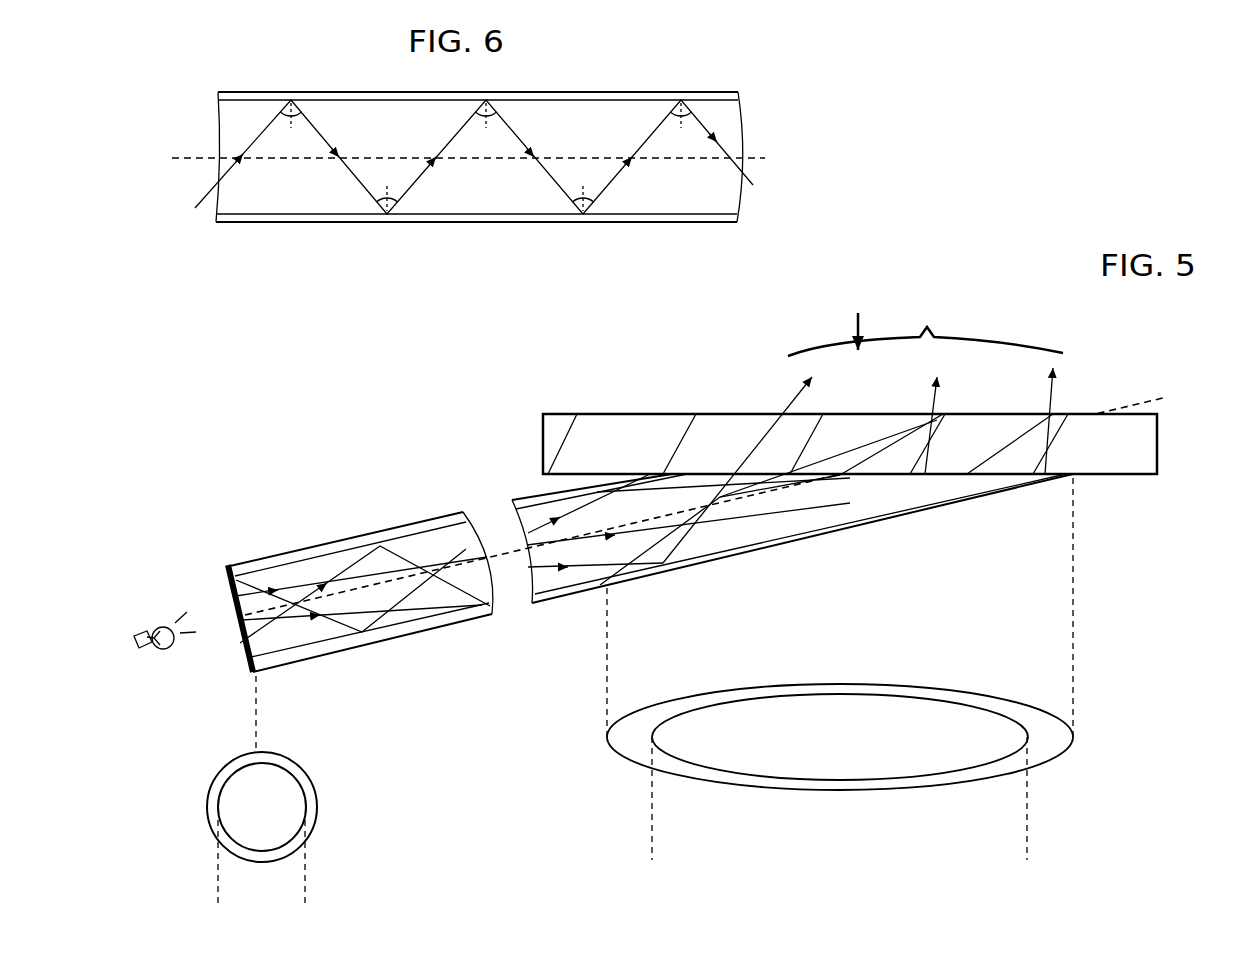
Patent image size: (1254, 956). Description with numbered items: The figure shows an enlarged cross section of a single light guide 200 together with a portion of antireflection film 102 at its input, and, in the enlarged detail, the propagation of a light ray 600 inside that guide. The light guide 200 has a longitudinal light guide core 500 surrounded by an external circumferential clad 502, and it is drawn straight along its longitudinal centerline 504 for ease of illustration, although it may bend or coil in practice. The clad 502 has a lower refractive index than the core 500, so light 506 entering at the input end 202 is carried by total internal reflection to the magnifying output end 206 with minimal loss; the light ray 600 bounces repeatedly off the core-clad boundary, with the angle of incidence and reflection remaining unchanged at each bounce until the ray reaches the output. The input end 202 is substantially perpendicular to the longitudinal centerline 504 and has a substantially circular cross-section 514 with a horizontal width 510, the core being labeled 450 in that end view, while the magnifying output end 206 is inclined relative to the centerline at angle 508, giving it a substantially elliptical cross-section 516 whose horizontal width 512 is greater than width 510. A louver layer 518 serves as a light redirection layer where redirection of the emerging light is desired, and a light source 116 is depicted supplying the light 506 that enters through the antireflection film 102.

In FIG. 5, the antireflection film 102 is at (228, 565).
In FIG. 5, the light source 116 is at (158, 622).
In FIG. 6, the light guide 200 is at (410, 82).
In FIG. 5, the light guide 200 is at (305, 525).
In FIG. 5, the input end 202 is at (268, 650).
In FIG. 5, the magnifying output end 206 is at (810, 478).
In FIG. 5, the core cross section 450 is at (240, 816).
In FIG. 6, the light guide core 500 is at (325, 196).
In FIG. 5, the light guide core 500 is at (413, 566).
In FIG. 6, the clad 502 is at (240, 99).
In FIG. 5, the clad 502 is at (345, 543).
In FIG. 6, the longitudinal centerline 504 is at (447, 158).
In FIG. 5, the longitudinal centerline 504 is at (723, 500).
In FIG. 5, the light 506 is at (194, 647).
In FIG. 5, the angle 508 is at (690, 508).
In FIG. 5, the horizontal width of input end 510 is at (304, 893).
In FIG. 5, the horizontal width of magnifying output end 512 is at (1026, 843).
In FIG. 5, the circular cross-section 514 is at (320, 788).
In FIG. 5, the elliptical cross-section 516 is at (1038, 704).
In FIG. 5, the louver layer 518 is at (548, 437).
In FIG. 6, the light ray 600 is at (461, 167).